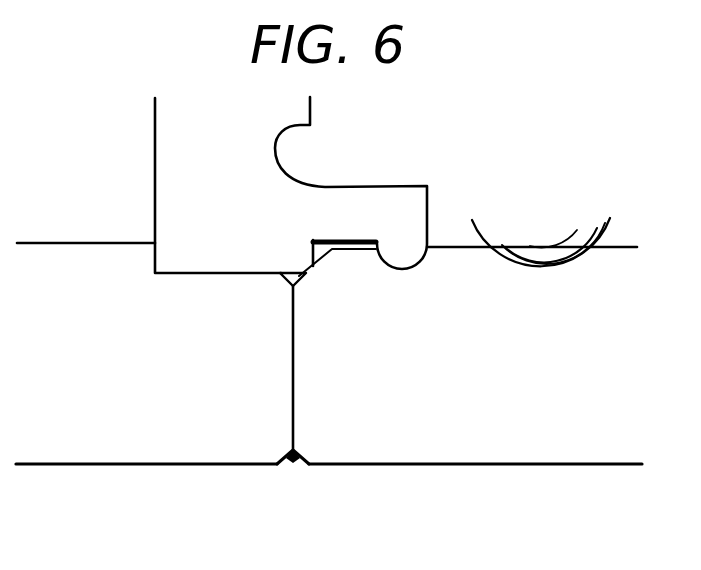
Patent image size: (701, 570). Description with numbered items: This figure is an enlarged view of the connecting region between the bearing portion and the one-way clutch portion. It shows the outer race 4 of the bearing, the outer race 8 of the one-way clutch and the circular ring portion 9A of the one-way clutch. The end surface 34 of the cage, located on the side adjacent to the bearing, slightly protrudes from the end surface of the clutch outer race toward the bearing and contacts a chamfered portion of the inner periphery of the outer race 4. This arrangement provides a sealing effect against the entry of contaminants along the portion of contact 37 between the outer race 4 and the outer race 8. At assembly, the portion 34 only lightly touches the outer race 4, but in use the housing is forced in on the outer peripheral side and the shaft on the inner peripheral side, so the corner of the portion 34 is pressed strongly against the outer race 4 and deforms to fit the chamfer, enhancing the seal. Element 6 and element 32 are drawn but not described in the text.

The outer race of the bearing 4 is at (460, 452).
The roller 6 is at (547, 252).
The outer race of the OWC 8 is at (190, 452).
The circular ring portion of the OWC 9A is at (165, 151).
The hook member 32 is at (408, 200).
The end surface of the cage 34 is at (313, 250).
The portion of contact 37 is at (292, 468).